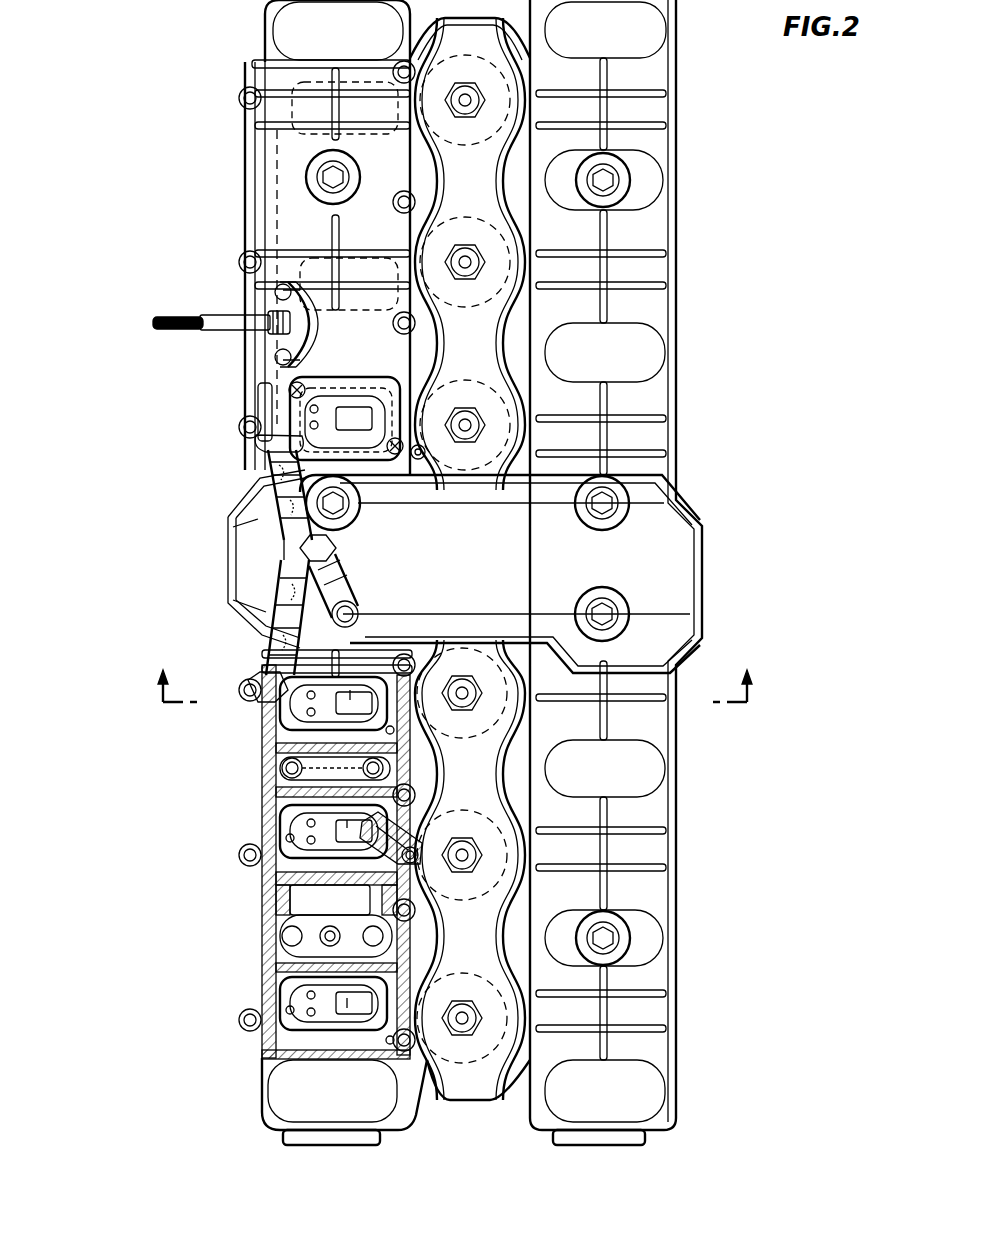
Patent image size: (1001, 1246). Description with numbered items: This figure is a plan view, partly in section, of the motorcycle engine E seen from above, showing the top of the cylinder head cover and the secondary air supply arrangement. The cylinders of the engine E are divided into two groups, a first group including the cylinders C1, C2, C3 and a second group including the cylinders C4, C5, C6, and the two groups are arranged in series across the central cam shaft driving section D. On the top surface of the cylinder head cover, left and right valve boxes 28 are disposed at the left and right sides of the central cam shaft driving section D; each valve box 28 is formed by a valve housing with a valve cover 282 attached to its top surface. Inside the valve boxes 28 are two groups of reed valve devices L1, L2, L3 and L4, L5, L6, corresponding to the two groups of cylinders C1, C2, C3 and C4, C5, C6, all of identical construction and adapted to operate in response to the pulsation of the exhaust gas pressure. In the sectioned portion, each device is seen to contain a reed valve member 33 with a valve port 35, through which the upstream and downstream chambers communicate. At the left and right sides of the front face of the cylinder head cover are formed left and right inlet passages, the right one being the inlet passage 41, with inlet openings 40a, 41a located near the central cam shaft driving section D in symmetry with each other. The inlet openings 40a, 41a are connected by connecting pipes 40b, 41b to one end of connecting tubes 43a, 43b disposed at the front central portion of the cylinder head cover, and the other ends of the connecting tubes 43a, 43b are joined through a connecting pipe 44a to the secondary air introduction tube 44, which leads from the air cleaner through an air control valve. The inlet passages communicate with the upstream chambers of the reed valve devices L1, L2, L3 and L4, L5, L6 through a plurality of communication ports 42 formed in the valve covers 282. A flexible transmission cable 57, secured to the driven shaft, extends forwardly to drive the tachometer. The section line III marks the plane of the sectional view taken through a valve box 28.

The valve box 28 is at (236, 184).
The valve cover 282 is at (254, 151).
The reed valve device L1 is at (263, 718).
The reed valve device L2 is at (263, 813).
The reed valve device L3 is at (263, 990).
The reed valve device L4 is at (355, 385).
The reed valve device L5 is at (318, 262).
The reed valve device L6 is at (302, 104).
The cylinder C1 is at (454, 637).
The cylinder C2 is at (460, 803).
The cylinder C3 is at (458, 968).
The cylinder C4 is at (462, 480).
The cylinder C5 is at (462, 314).
The cylinder C6 is at (462, 150).
The central cam shaft driving section D is at (404, 571).
The engine E is at (705, 426).
The flexible transmission cable 57 is at (213, 308).
The inlet passage 41 is at (260, 352).
The inlet opening 41a is at (258, 400).
The connecting pipe 41b is at (263, 493).
The connecting tube 43a is at (288, 595).
The connecting tube 43b is at (284, 530).
The secondary air introduction tube 44 is at (352, 609).
The connecting pipe 44a is at (322, 556).
The inlet opening 40a is at (245, 693).
The connecting pipe 40b is at (262, 620).
The communication port 42 is at (272, 707).
The reed valve member 33 is at (384, 710).
The valve port 35 is at (350, 695).
The section line III- III is at (459, 688).